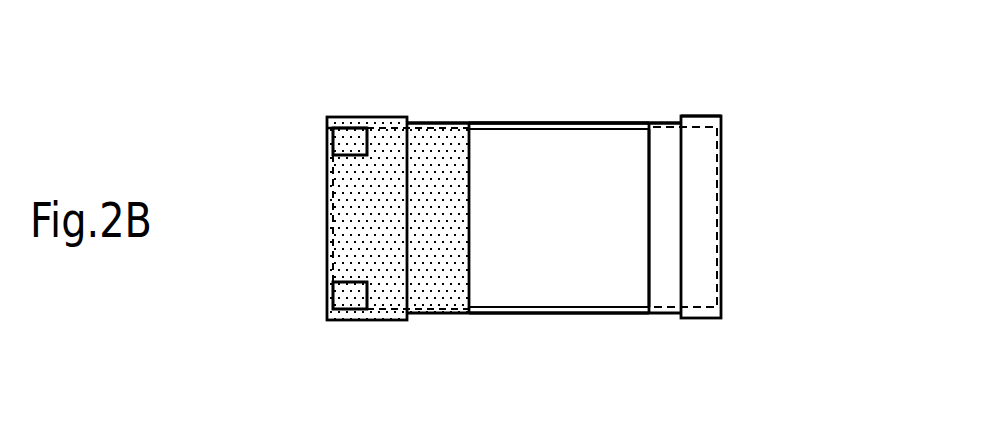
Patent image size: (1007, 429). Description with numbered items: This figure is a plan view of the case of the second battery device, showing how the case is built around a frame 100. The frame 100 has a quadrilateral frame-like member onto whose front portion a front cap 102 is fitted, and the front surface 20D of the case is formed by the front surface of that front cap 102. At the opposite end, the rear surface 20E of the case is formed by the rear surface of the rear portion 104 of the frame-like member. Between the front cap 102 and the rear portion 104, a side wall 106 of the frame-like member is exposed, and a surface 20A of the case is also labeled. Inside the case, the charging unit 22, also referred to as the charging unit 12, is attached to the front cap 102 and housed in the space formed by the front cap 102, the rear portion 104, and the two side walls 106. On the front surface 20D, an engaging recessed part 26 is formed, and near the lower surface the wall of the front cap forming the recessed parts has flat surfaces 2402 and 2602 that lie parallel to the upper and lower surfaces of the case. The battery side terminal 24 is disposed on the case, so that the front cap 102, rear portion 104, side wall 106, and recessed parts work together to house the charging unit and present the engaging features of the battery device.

The frame 100 is at (617, 122).
The side wall 106 is at (557, 122).
The surface of case 20A is at (502, 122).
The front surface 20D is at (327, 227).
The engaging recessed part 26 is at (342, 143).
The flat surface 2602 is at (350, 141).
The front cap 102 is at (327, 127).
The battery side terminal 24 is at (337, 313).
The flat surface 2402 is at (350, 295).
The rear surface 20E is at (722, 181).
The rear portion 104 is at (726, 128).
The charging unit 12 is at (717, 236).
The charging unit 22 is at (622, 288).